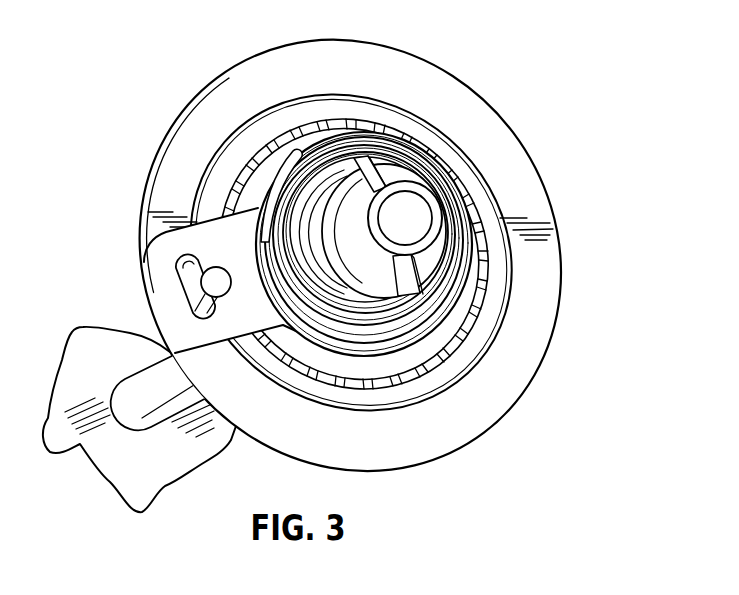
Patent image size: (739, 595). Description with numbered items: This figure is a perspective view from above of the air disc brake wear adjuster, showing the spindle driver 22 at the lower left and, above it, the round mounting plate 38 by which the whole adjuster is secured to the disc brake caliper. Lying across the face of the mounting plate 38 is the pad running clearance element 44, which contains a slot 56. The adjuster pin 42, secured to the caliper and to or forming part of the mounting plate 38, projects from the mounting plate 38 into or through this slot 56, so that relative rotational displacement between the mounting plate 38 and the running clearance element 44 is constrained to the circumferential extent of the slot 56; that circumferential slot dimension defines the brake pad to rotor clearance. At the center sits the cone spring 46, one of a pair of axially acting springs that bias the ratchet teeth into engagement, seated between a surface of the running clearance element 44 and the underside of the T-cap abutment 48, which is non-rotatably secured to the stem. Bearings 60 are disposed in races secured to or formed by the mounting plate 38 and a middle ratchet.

The spindle driver 22 is at (84, 476).
The mounting plate 38 is at (537, 372).
The adjuster pin 42 is at (212, 285).
The pad running clearance element 44 is at (158, 251).
The cone spring 46 is at (452, 190).
The T-cap abutment 48 is at (430, 256).
The slot 56 is at (188, 270).
The bearings 60 is at (300, 125).